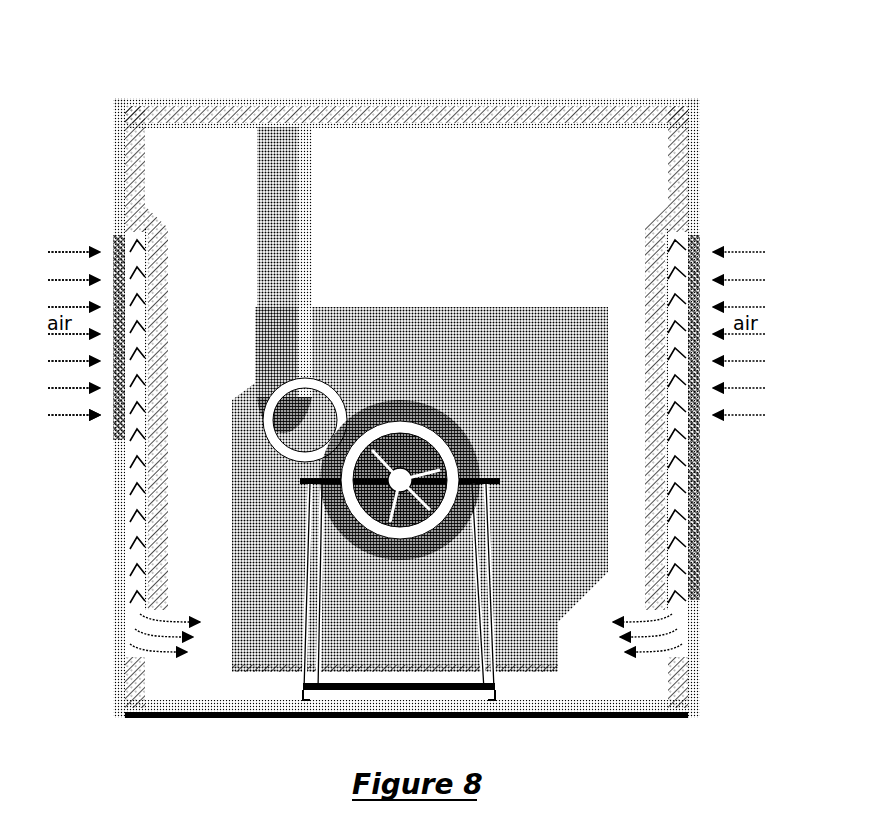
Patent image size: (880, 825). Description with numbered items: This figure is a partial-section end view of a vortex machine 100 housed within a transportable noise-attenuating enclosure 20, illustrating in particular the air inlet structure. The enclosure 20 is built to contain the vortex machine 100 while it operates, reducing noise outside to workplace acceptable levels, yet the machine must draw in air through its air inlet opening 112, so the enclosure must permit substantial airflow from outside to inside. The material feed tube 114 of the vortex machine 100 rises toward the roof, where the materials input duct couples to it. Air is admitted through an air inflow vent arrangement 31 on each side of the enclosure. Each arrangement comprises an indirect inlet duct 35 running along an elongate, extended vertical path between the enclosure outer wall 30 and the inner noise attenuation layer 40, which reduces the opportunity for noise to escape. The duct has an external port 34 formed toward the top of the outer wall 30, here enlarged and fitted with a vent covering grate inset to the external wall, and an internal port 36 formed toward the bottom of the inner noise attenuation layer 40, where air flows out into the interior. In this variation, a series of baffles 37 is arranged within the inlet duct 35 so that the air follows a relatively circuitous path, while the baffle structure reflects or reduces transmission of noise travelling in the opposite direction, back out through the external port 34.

The enclosure 20 is at (230, 78).
The enclosure outer wall 30 is at (533, 100).
The air inflow vent arrangement 31 is at (186, 284).
The external port 34 is at (698, 250).
The indirect inlet duct 35 is at (675, 527).
The internal port 36 is at (668, 642).
The baffles 37 is at (673, 480).
The inner noise attenuation layer 40 is at (460, 118).
The vortex machine 100 is at (482, 290).
The air inlet opening 112 is at (403, 435).
The material feed tube 114 is at (303, 211).